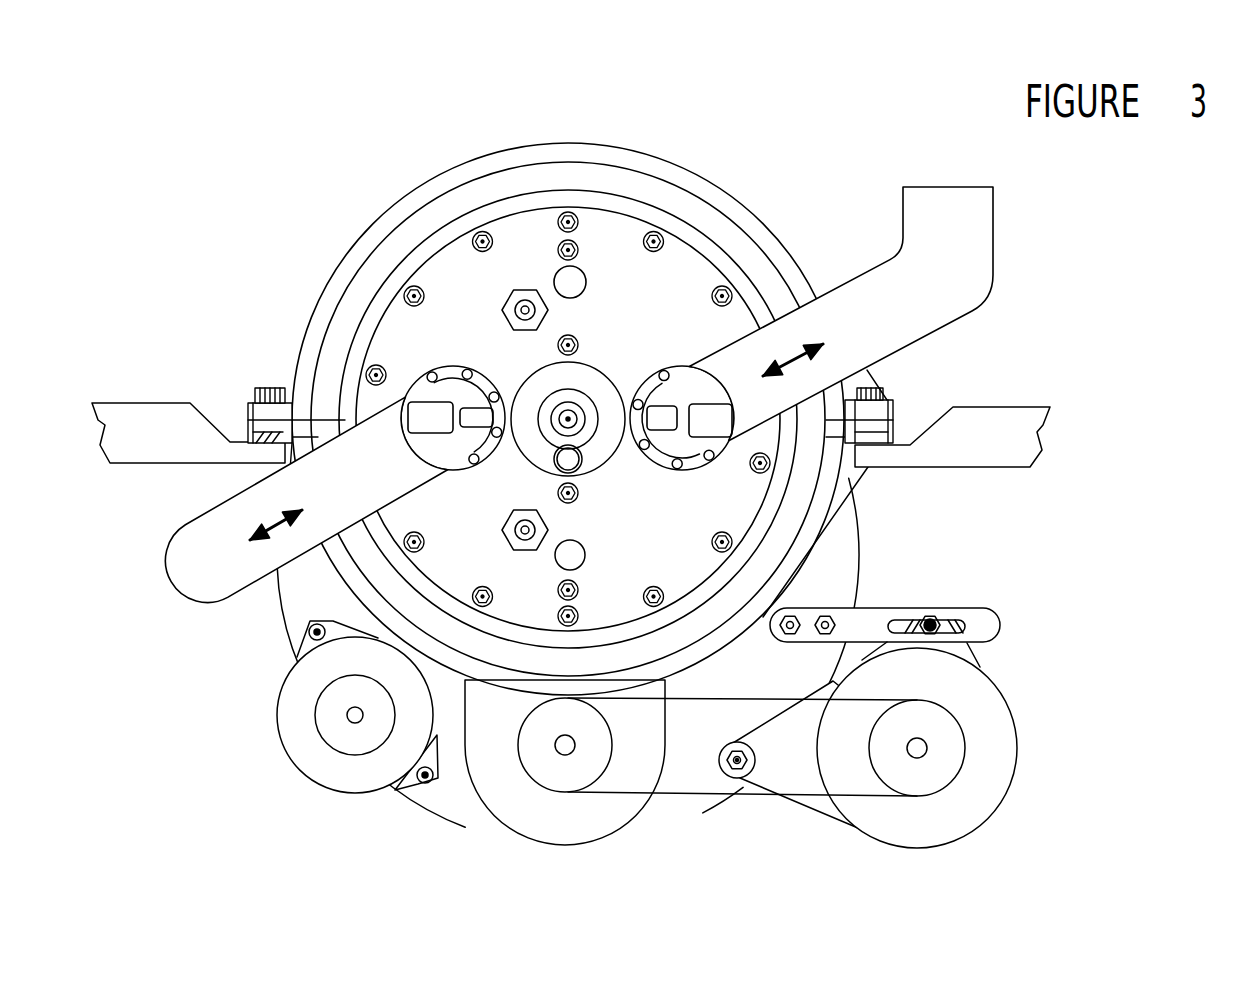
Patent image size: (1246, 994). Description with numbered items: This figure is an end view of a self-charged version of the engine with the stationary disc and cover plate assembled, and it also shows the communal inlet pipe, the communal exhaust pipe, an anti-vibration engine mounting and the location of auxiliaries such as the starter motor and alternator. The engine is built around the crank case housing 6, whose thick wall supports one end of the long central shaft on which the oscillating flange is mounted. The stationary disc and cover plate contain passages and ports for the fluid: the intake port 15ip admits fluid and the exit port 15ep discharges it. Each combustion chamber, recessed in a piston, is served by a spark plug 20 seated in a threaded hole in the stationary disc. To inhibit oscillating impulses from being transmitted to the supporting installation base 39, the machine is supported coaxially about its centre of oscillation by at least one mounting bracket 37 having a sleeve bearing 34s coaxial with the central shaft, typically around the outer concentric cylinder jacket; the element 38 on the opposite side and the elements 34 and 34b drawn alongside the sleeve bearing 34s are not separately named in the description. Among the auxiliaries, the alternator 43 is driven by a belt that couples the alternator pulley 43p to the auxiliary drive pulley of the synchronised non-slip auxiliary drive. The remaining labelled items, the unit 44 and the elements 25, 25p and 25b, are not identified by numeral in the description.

The crank case housing 6 is at (833, 580).
The casing ring 34 is at (447, 183).
The casing ring 34b is at (780, 580).
The sleeve bearing 34s is at (568, 419).
The spark plug 20 is at (503, 298).
The intake port 15ip is at (582, 272).
The exit port 15ep is at (430, 410).
The flange clamp 38 is at (247, 428).
The mounting bracket 37 is at (873, 415).
The supporting installation base 39 is at (198, 440).
The alternator 43 is at (990, 707).
The alternator pulley 43p is at (938, 772).
The idler pulley 44 is at (297, 718).
The drive pulley 25 is at (560, 747).
The drive pulley shaft 25p is at (557, 773).
The belt guard 25b is at (680, 800).